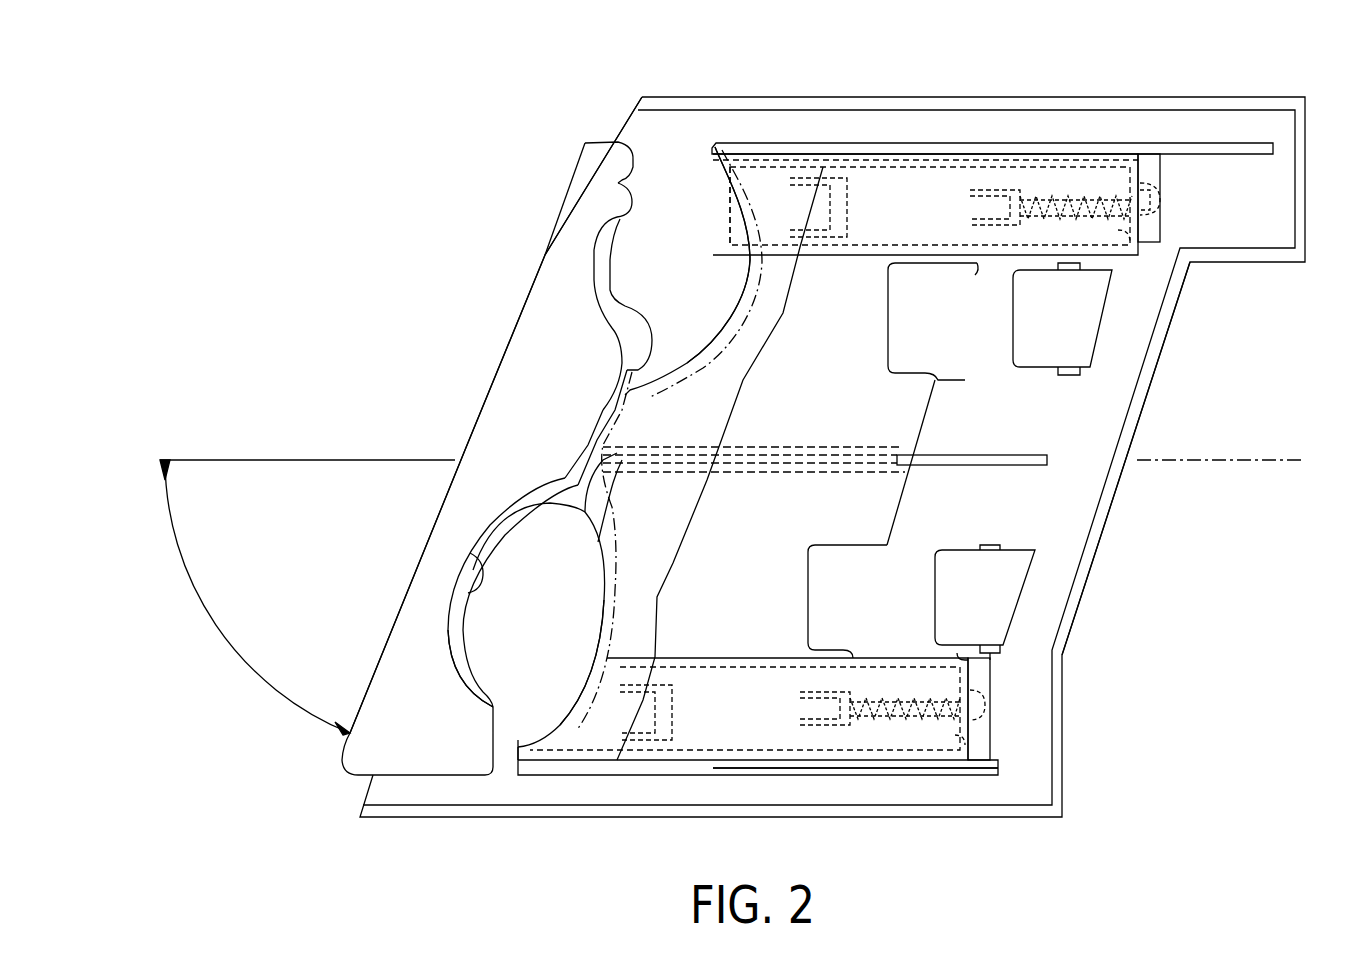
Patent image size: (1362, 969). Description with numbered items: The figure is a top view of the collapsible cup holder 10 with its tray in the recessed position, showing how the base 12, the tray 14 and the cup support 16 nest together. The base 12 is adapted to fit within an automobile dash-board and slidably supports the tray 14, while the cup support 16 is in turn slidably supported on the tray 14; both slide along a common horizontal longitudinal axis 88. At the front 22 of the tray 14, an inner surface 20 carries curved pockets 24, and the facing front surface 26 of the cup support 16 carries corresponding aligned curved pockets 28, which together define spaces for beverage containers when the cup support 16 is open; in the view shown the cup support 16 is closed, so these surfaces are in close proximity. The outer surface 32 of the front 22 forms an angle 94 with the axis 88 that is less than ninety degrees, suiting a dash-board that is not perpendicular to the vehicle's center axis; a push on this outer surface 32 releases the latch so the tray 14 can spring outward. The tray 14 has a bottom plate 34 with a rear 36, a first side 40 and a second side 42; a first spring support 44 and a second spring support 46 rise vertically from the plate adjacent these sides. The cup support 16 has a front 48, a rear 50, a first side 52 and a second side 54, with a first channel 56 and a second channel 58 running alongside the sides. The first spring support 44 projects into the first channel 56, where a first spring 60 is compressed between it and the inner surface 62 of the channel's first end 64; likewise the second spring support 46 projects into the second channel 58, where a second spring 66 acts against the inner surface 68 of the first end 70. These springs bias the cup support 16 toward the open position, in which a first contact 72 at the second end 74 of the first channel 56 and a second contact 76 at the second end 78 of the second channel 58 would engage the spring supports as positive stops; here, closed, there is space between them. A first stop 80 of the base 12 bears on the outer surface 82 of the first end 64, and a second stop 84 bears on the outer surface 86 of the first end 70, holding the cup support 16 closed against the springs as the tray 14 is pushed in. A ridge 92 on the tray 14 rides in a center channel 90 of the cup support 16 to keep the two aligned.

The collapsible cup holder 10 is at (522, 112).
The base 12 is at (947, 97).
The tray 14 is at (1080, 425).
The cup support 16 is at (1127, 377).
The inner surface 20 is at (618, 297).
The front 22 is at (604, 150).
The curved pockets 24 is at (603, 217).
The front surface 26 is at (578, 515).
The curved pockets 28 is at (727, 323).
The outer surface 32 is at (468, 442).
The bottom plate 34 is at (1032, 508).
The rear 36 is at (1063, 475).
The first side 40 is at (1090, 148).
The second side 42 is at (775, 763).
The first spring support 44 is at (997, 190).
The second spring support 46 is at (825, 730).
The front 48 is at (618, 432).
The rear 50 is at (880, 508).
The first side 52 is at (910, 150).
The second side 54 is at (713, 752).
The first channel 56 is at (887, 198).
The second channel 58 is at (757, 713).
The first spring 60 is at (1070, 223).
The inner surface 62 is at (1125, 240).
The first end 64 is at (1140, 178).
The second spring 66 is at (907, 718).
The inner surface 68 is at (948, 770).
The first end 70 is at (968, 747).
The first contact 72 is at (814, 183).
The second end 74 is at (765, 187).
The second contact 76 is at (655, 713).
The second end 78 is at (595, 723).
The first stop 80 is at (1150, 205).
The outer surface 82 is at (1142, 181).
The second stop 84 is at (978, 707).
The outer surface 86 is at (968, 738).
The horizontal longitudinal axis 88 is at (1232, 462).
The center channel 90 is at (900, 447).
The ridge 92 is at (1030, 462).
The angle 94 is at (255, 597).